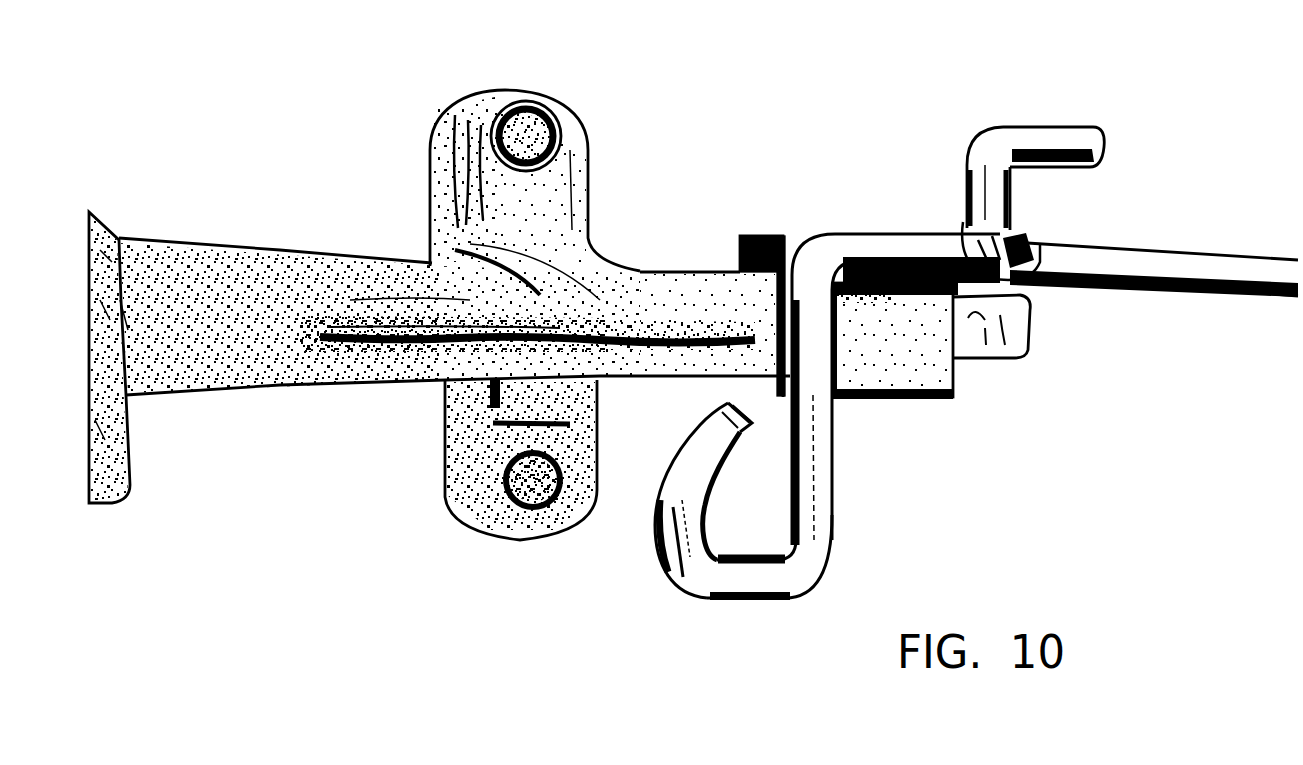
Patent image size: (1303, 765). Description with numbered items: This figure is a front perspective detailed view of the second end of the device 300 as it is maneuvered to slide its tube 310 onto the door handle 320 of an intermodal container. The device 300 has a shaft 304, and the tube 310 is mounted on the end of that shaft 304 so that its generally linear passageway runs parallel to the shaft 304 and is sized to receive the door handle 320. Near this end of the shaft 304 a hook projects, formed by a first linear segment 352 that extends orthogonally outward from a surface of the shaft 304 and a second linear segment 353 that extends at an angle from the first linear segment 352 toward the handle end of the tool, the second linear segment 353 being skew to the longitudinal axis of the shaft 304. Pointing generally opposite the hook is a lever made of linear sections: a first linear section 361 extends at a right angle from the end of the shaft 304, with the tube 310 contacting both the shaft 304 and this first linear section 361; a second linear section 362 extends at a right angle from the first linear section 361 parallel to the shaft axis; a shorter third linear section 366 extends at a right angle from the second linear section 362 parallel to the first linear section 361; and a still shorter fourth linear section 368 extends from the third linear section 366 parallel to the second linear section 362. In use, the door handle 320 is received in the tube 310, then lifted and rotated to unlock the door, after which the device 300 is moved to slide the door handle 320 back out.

The device 300 is at (693, 348).
The shaft 304 is at (1206, 268).
The tube 310 is at (942, 365).
The door handle 320 is at (699, 292).
The first linear segment 352 is at (973, 185).
The second linear segment 353 is at (1048, 143).
The first linear section 361 is at (820, 480).
The second linear section 362 is at (767, 587).
The third linear section 366 is at (670, 553).
The fourth linear section 368 is at (720, 413).